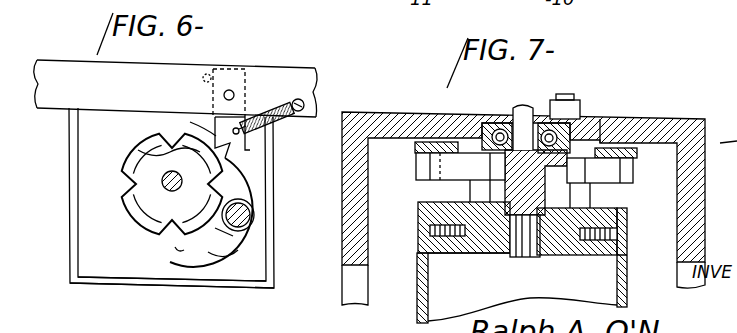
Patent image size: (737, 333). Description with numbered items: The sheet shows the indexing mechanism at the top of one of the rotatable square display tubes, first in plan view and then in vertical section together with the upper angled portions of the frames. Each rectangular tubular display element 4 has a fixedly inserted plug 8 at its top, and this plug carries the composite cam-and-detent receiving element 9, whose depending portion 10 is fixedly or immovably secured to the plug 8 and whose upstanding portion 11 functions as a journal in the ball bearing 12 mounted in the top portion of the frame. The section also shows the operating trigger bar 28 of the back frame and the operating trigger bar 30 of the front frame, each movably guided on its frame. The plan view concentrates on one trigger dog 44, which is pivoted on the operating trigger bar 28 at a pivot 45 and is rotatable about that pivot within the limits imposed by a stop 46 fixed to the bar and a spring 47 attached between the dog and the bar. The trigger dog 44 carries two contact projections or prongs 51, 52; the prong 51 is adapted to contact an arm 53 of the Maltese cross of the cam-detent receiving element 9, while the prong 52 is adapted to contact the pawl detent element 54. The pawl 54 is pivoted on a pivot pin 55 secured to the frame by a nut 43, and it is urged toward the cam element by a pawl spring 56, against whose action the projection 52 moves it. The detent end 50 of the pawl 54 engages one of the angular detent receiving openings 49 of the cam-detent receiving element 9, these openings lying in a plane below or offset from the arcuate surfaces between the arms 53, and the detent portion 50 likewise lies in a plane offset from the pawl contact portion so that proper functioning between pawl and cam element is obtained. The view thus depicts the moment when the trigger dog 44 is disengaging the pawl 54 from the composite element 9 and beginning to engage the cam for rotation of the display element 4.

In FIG. 6, the rectangular tubular display element 4 is at (86, 284).
In FIG. 7, the rectangular tubular display element 4 is at (641, 262).
In FIG. 7, the plug 8 is at (563, 247).
In FIG. 7, the composite cam-and-detent receiving element 9 is at (497, 205).
In FIG. 7, the depending portion 10 is at (517, 251).
In FIG. 6, the upstanding portion 11 is at (165, 186).
In FIG. 7, the upstanding portion 11 is at (520, 113).
In FIG. 7, the ball bearing 12 is at (548, 128).
In FIG. 7, the operating trigger bar 28 is at (638, 148).
In FIG. 7, the operating trigger bar 30 is at (425, 143).
In FIG. 7, the nut 43 is at (573, 110).
In FIG. 6, the trigger dog 44 is at (227, 120).
In FIG. 7, the trigger dog 44 is at (437, 163).
In FIG. 6, the pivot 45 is at (224, 95).
In FIG. 6, the stop 46 is at (210, 72).
In FIG. 6, the spring 47 is at (283, 95).
In FIG. 6, the angular detent receiving opening 49 is at (130, 179).
In FIG. 6, the detent end 50 is at (178, 249).
In FIG. 6, the contact projection 51 is at (188, 118).
In FIG. 6, the contact projection 52 is at (250, 150).
In FIG. 6, the arm 53 is at (140, 153).
In FIG. 6, the pawl detent element 54 is at (243, 185).
In FIG. 6, the pivot pin 55 is at (254, 215).
In FIG. 6, the pawl spring 56 is at (231, 246).